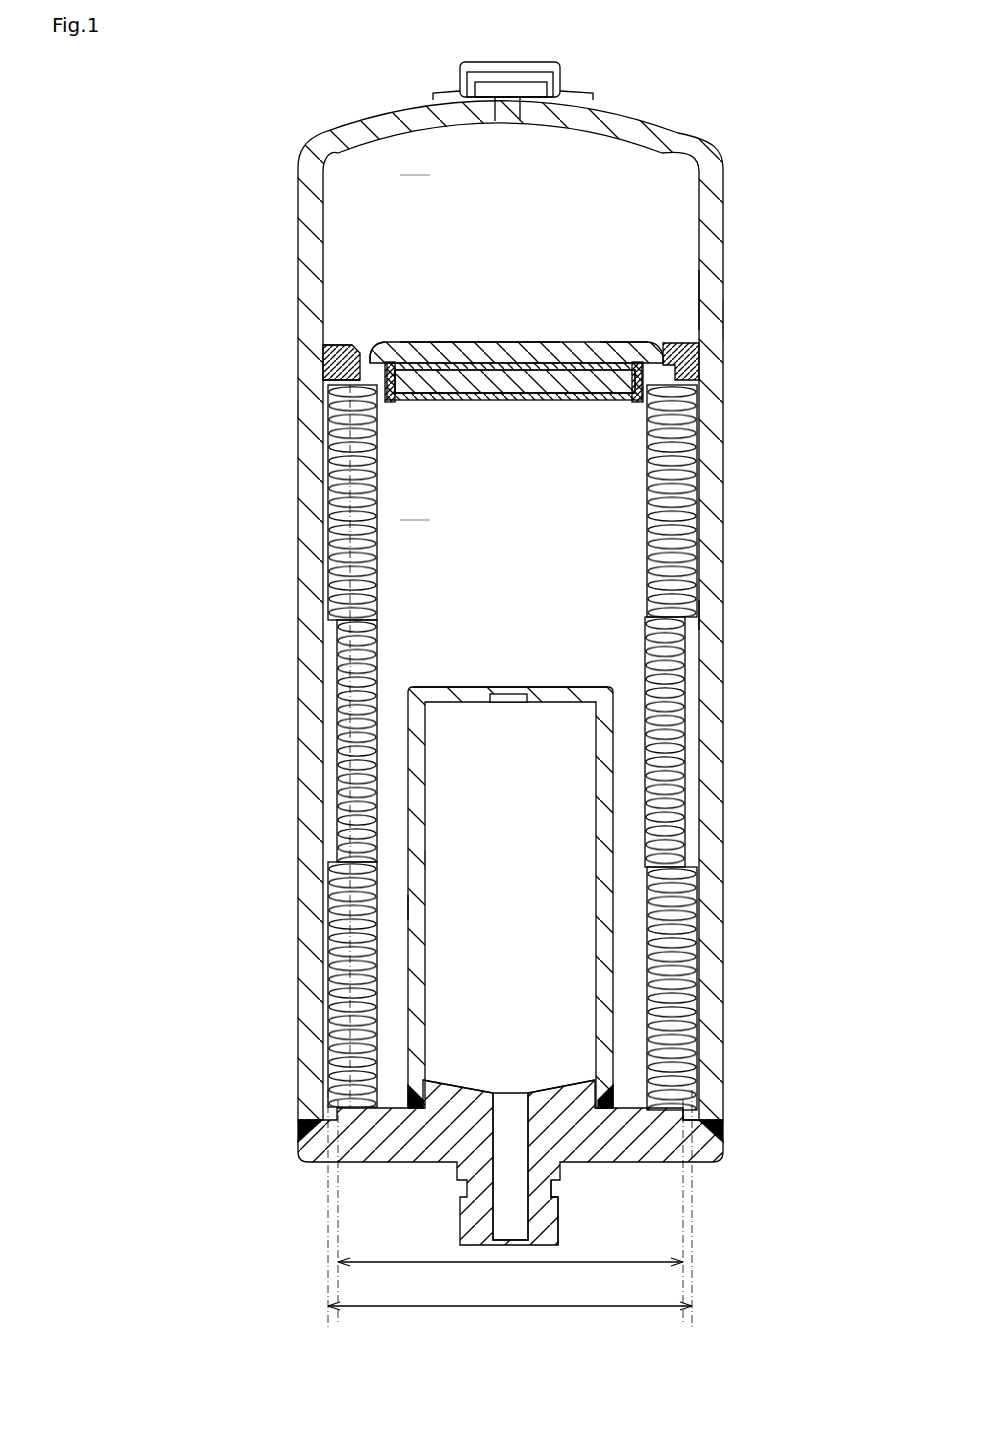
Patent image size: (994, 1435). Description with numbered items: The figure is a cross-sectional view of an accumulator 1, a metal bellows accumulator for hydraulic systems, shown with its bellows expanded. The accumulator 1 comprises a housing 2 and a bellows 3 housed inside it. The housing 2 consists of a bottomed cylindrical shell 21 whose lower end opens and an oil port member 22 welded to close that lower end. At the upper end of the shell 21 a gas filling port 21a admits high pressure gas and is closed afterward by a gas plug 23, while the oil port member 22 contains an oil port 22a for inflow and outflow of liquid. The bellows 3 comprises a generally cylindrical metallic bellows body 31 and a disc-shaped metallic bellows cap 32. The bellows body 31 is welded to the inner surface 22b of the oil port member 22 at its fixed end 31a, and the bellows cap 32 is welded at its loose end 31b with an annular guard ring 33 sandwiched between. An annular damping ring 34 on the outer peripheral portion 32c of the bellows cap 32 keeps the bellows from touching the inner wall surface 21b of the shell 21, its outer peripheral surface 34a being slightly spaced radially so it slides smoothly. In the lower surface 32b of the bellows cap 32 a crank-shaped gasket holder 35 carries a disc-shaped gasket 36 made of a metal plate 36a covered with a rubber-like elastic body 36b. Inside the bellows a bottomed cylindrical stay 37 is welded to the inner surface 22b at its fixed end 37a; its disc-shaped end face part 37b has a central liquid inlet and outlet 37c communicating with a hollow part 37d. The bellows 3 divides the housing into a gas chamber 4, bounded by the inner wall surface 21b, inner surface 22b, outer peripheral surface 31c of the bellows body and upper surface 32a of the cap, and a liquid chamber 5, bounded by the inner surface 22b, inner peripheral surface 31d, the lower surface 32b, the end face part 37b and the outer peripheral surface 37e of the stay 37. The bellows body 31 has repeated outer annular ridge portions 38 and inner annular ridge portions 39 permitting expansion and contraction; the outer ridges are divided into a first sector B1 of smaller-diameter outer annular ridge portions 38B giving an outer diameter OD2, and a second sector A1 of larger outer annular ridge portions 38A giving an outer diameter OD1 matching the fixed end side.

The accumulator 1 is at (318, 106).
The housing 2 is at (738, 326).
The bellows 3 is at (622, 338).
The gas chamber 4 is at (428, 200).
The liquid chamber 5 is at (428, 535).
The shell 21 is at (706, 132).
The gas filling port 21a is at (512, 97).
The inner wall surface 21b is at (692, 282).
The oil port member 22 is at (720, 1168).
The oil port 22a is at (495, 1203).
The inner surface 22b is at (620, 1145).
The gas plug 23 is at (500, 72).
The bellows body 31 is at (688, 742).
The fixed end 31a is at (688, 1113).
The loose end 31b is at (692, 405).
The outer peripheral surface 31c is at (702, 612).
The inner peripheral surface 31d is at (645, 612).
The bellows cap 32 is at (542, 338).
The upper surface 32a is at (462, 340).
The lower surface 32b is at (640, 404).
The outer peripheral portion 32c is at (356, 343).
The guard ring 33 is at (330, 392).
The damping ring 34 is at (338, 336).
The outer peripheral surface 34a is at (325, 357).
The gasket holder 35 is at (392, 404).
The gasket 36 is at (484, 404).
The metal plate 36a is at (520, 402).
The rubber-like elastic body 36b is at (572, 402).
The stay 37 is at (432, 680).
The fixed end 37a is at (432, 1088).
The end face part 37b is at (467, 688).
The liquid inlet and outlet 37c is at (525, 704).
The hollow part 37d is at (450, 858).
The outer peripheral surface 37e is at (410, 905).
The outer annular ridge portions 38 is at (698, 528).
The outer annular ridge portions 38A is at (336, 600).
The outer annular ridge portions 38B is at (340, 680).
The inner annular ridge portions 39 is at (645, 527).
The second sector A1 is at (340, 477).
The first sector B1 is at (340, 750).
The outer diameter OD1 is at (510, 1212).
The outer diameter OD2 is at (510, 1212).